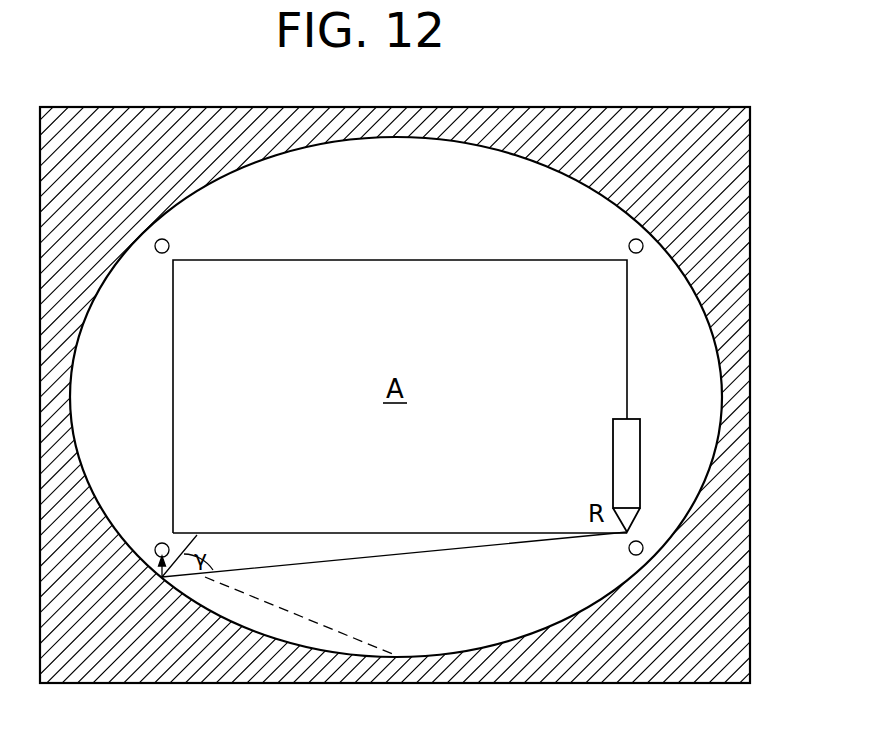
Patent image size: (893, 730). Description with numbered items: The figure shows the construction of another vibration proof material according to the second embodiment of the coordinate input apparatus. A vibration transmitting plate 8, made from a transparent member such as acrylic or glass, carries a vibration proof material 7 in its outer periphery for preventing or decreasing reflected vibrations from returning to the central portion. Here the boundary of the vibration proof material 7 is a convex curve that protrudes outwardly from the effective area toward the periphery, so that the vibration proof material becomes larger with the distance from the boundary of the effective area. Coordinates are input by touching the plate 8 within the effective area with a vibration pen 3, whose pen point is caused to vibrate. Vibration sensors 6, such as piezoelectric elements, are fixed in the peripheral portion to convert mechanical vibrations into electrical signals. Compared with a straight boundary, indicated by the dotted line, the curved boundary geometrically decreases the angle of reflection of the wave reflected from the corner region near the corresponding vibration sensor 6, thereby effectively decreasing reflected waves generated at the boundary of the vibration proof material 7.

The vibration transmitting plate 8 is at (677, 107).
The vibration proof material 7 is at (735, 197).
The vibration sensor 6 is at (172, 243).
The vibration pen 3 is at (640, 436).